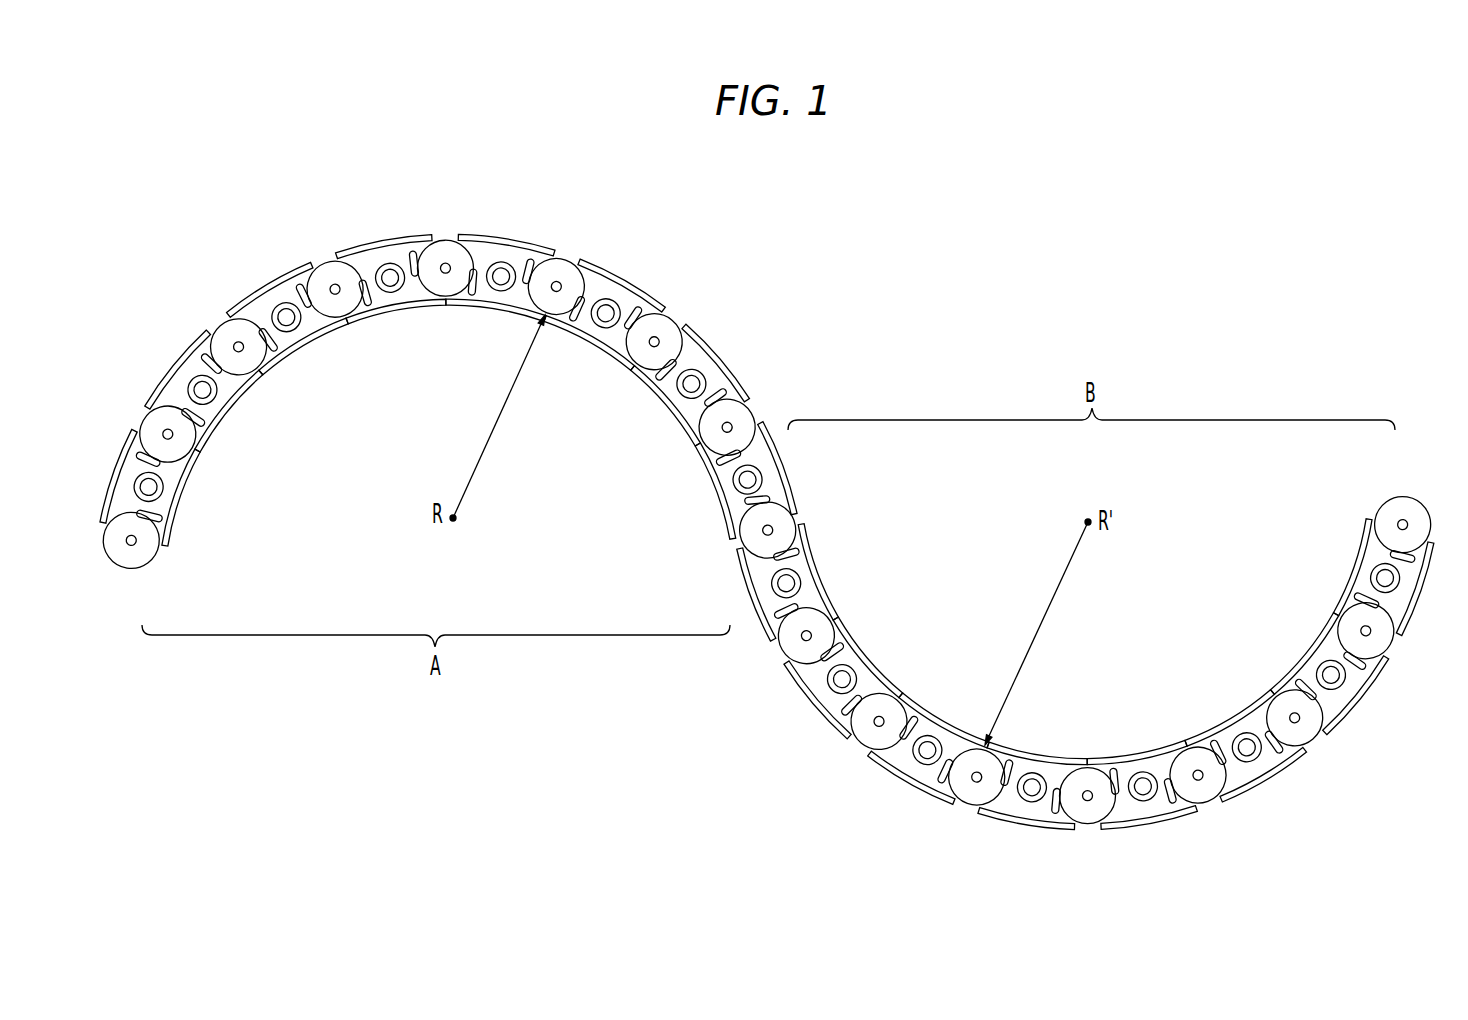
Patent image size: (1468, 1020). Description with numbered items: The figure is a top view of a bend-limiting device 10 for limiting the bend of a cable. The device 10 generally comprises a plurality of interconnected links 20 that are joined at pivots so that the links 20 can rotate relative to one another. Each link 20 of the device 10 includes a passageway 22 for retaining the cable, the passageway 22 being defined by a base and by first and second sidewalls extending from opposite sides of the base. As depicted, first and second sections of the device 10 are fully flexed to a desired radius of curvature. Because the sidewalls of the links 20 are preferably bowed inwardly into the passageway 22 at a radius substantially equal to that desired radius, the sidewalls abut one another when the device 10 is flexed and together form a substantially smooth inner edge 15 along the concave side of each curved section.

The bend-limiting device 10 is at (372, 186).
The inner edge 15 is at (312, 335).
The link 20 is at (713, 363).
The passageway 22 is at (601, 293).